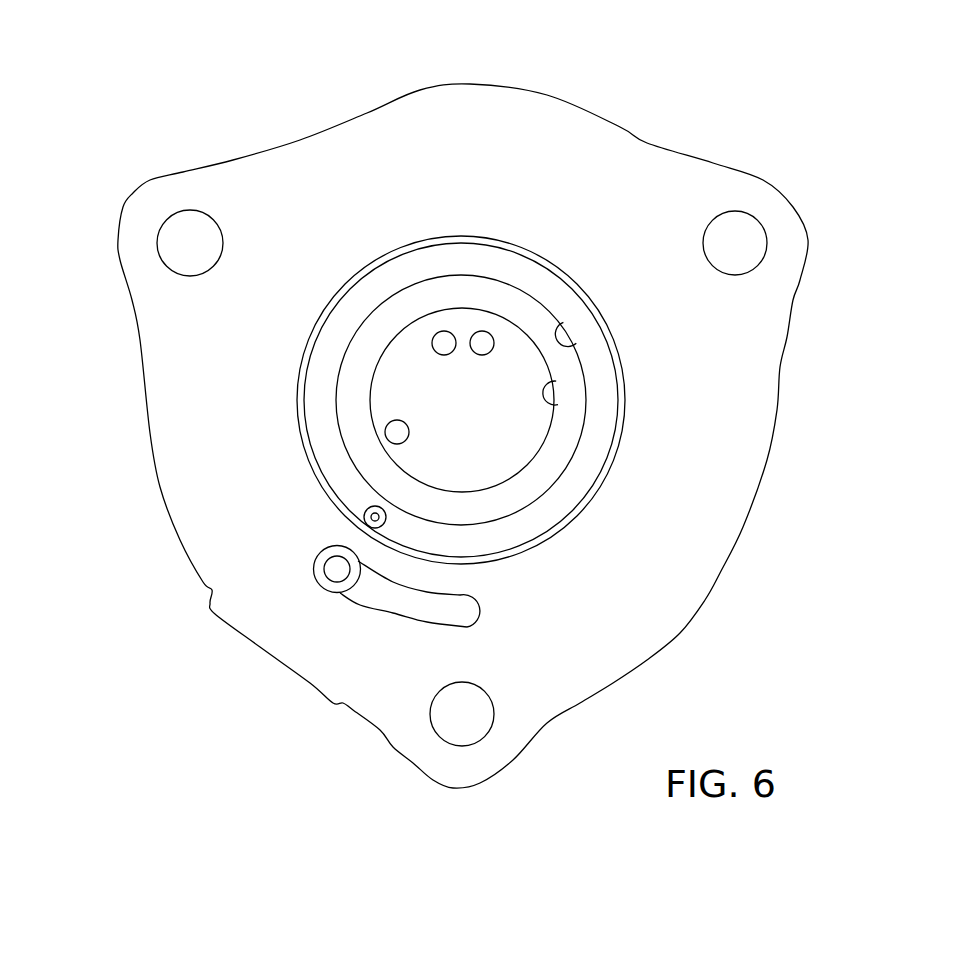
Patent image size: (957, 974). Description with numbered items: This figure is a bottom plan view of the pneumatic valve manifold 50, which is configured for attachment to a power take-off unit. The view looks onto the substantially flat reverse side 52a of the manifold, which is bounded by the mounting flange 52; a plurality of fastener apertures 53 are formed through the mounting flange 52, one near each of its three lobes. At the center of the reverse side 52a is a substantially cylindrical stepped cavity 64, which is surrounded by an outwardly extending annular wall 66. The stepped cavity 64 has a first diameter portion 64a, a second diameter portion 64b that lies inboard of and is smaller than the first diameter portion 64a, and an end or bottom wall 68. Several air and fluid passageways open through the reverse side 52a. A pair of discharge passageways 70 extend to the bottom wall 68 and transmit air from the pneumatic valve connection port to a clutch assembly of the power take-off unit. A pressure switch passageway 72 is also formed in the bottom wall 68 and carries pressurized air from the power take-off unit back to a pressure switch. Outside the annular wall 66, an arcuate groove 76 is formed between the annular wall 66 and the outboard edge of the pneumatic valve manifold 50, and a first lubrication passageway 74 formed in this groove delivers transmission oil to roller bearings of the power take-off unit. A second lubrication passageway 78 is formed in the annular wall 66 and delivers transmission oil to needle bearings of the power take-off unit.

The pneumatic valve manifold 50 is at (107, 100).
The mounting flange 52 is at (273, 155).
The reverse side 52a is at (411, 164).
The fastener apertures 53 is at (190, 210).
The stepped cavity 64 is at (328, 363).
The first diameter portion 64a is at (578, 343).
The second diameter portion 64b is at (555, 407).
The annular wall 66 is at (513, 270).
The bottom wall 68 is at (425, 403).
The discharge passageways 70 is at (444, 343).
The pressure switch passageway 72 is at (397, 432).
The first lubrication passageway 74 is at (334, 563).
The arcuate groove 76 is at (411, 590).
The second lubrication passageway 78 is at (365, 517).